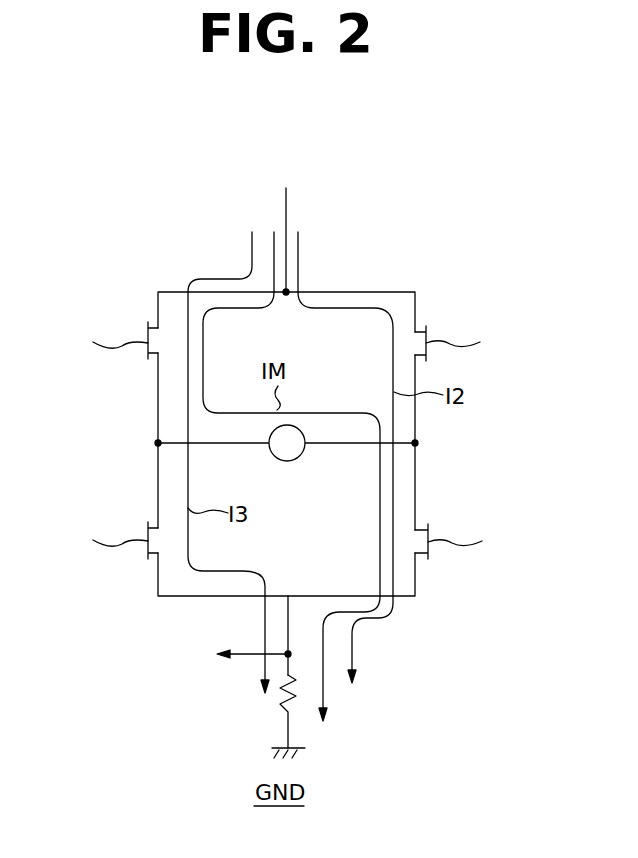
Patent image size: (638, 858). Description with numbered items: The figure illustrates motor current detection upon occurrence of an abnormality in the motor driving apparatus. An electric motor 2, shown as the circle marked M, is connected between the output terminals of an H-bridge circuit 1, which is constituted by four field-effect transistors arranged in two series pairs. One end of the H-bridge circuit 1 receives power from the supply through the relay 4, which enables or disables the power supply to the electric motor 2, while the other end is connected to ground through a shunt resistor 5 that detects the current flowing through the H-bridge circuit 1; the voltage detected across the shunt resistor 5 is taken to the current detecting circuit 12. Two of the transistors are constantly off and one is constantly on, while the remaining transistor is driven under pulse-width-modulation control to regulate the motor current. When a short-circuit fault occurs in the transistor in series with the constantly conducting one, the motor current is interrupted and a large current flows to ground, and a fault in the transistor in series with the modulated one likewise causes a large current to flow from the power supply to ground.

The H-bridge circuit 1 is at (338, 266).
The electric motor 2 is at (287, 462).
The relay 4 is at (285, 226).
The shunt resistor 5 is at (283, 700).
The current detecting circuit 12 is at (171, 653).